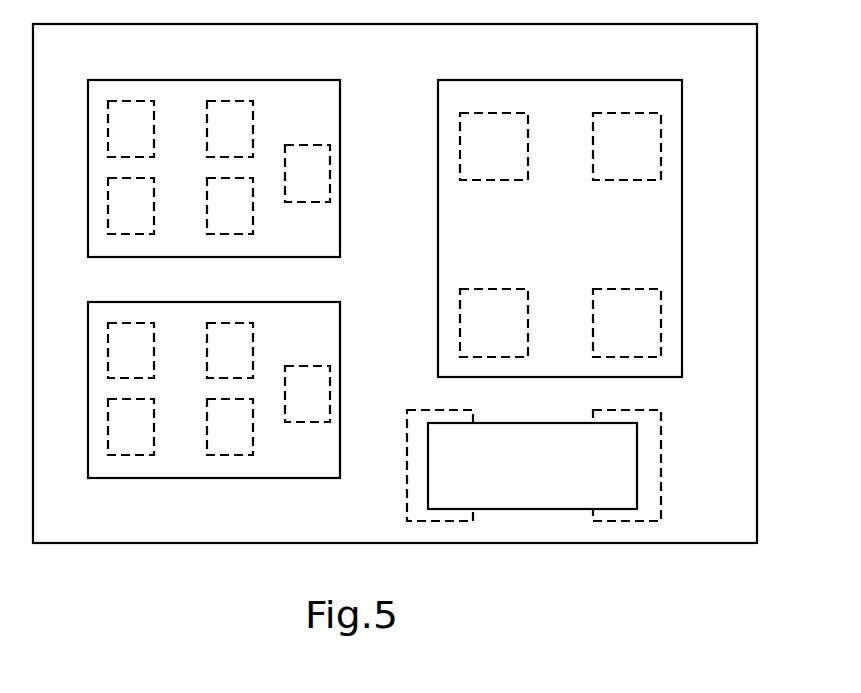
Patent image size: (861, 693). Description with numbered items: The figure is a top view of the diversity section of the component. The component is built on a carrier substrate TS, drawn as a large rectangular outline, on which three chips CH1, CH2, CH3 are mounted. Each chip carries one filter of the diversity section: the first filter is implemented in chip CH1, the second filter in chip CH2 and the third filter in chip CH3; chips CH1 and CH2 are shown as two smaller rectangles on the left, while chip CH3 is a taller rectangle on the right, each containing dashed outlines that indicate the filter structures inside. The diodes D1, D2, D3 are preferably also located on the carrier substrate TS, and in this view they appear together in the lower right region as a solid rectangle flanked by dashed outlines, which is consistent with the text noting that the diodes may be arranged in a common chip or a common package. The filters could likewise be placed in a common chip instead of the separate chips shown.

The carrier substrate TS is at (757, 117).
The chip CH1 is at (300, 467).
The chip CH2 is at (292, 88).
The chip CH3 is at (682, 250).
The diode D1 is at (553, 498).
The diode D2 is at (440, 465).
The diode D3 is at (627, 465).